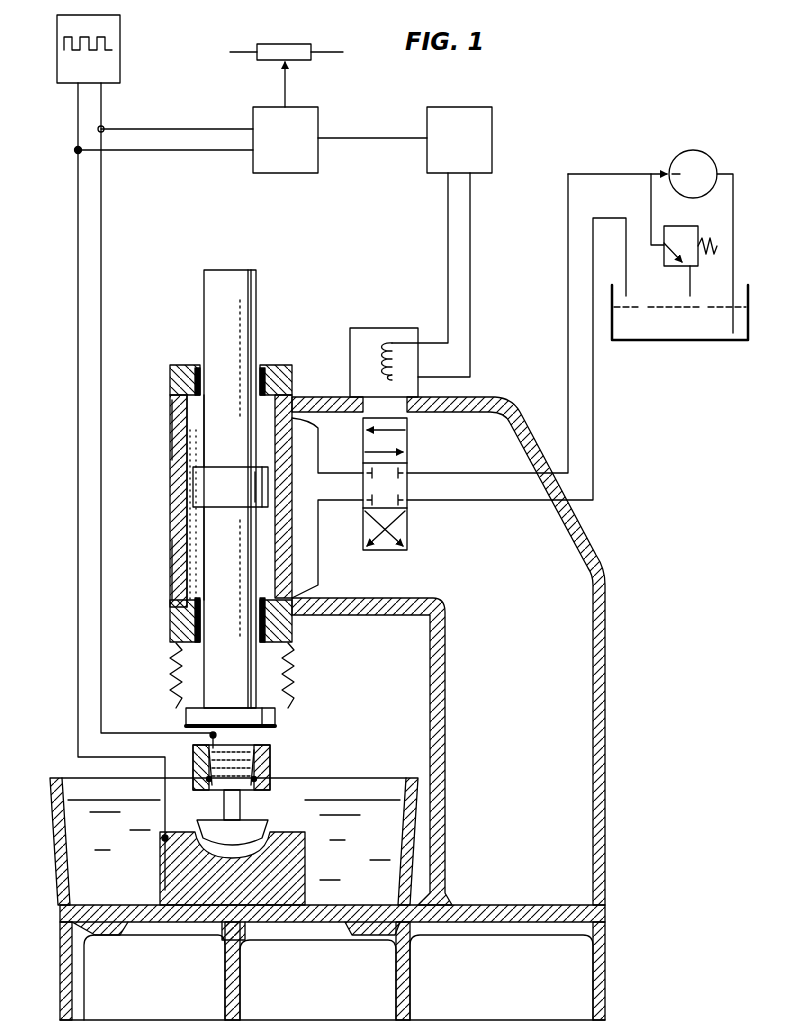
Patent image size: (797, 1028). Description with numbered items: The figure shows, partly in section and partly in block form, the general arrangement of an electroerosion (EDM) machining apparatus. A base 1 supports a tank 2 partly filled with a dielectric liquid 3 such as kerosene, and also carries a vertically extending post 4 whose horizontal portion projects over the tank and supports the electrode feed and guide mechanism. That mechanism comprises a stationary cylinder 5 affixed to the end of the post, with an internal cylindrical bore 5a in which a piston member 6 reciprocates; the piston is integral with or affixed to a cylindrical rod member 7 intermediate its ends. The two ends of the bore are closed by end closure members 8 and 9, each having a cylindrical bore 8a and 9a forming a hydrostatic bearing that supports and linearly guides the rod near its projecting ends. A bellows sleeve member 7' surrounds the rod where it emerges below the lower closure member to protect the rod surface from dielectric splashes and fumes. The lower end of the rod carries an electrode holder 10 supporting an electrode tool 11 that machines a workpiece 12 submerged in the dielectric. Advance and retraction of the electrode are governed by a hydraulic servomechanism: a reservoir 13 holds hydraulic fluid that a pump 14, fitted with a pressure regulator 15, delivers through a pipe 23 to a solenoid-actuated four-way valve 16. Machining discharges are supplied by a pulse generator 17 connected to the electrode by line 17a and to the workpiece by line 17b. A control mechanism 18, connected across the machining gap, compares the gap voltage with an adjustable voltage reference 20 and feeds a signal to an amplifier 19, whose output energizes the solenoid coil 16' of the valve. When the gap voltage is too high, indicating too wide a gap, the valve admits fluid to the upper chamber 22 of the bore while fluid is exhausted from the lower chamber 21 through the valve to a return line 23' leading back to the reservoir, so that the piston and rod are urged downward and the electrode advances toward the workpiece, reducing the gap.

The base 1 is at (62, 1002).
The tank 2 is at (80, 940).
The dielectric liquid 3 is at (72, 800).
The post 4 is at (600, 566).
The stationary cylinder 5 is at (170, 466).
The cylindrical bore 5a is at (190, 525).
The piston member 6 is at (218, 497).
The cylindrical rod member 7 is at (226, 498).
The bellows sleeve member 7' is at (248, 675).
The end closure member 8 is at (185, 363).
The cylindrical bore 8a is at (262, 368).
The end closure member 9 is at (170, 630).
The cylindrical bore 9a is at (204, 645).
The electrode holder 10 is at (268, 760).
The electrode tool 11 is at (258, 830).
The workpiece 12 is at (300, 878).
The reservoir 13 is at (712, 342).
The pump 14 is at (697, 150).
The pressure regulator 15 is at (683, 236).
The four-way valve 16 is at (405, 484).
The solenoid coil 16' is at (384, 348).
The pulse generator 17 is at (120, 30).
The line 17a is at (101, 245).
The line 17b is at (78, 272).
The control mechanism 18 is at (285, 140).
The amplifier 19 is at (492, 126).
The adjustable voltage reference 20 is at (283, 50).
The chamber 21 is at (190, 553).
The chamber 22 is at (195, 430).
The pipe 23 is at (430, 323).
The return line 23' is at (461, 408).